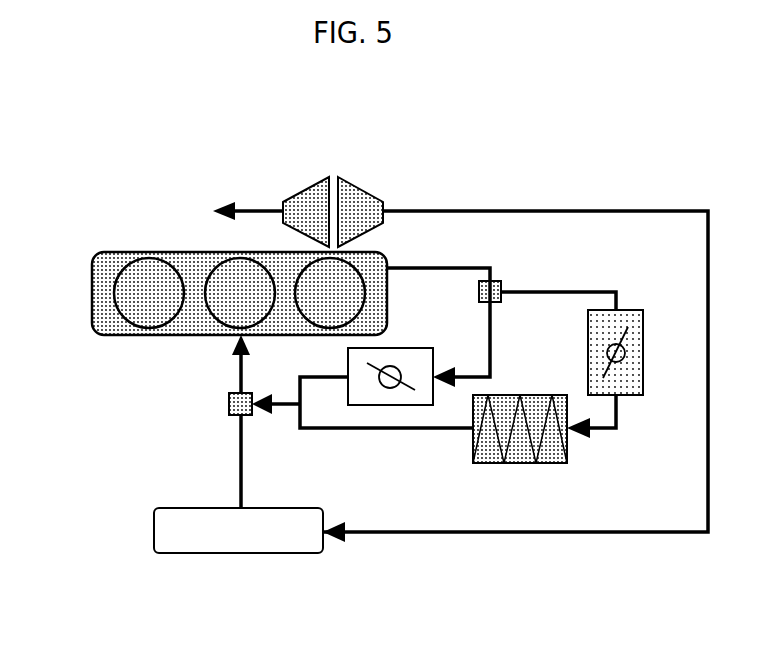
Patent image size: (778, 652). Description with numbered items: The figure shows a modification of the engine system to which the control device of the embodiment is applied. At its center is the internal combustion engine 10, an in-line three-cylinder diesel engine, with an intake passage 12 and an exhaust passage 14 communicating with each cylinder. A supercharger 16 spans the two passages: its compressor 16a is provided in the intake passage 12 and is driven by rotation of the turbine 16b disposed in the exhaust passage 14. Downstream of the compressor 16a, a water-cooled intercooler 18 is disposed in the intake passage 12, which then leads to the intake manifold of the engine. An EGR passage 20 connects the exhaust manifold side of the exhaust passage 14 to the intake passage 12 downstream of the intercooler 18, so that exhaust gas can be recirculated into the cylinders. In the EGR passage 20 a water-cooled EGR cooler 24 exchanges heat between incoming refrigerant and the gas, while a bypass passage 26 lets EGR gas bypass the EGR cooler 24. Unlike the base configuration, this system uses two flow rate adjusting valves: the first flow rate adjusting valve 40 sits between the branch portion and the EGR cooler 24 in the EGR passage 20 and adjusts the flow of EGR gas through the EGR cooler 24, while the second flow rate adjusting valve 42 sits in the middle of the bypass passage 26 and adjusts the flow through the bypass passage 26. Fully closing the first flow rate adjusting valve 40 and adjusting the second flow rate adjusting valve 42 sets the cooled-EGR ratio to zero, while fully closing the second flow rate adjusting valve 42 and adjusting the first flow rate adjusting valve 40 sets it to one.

The internal combustion engine 10 is at (92, 296).
The intake passage 12 is at (445, 210).
The exhaust passage 14 is at (258, 209).
The supercharger 16 is at (334, 162).
The compressor 16a is at (361, 188).
The turbine 16b is at (322, 186).
The intercooler 18 is at (154, 533).
The EGR passage 20 is at (432, 268).
The EGR cooler 24 is at (525, 465).
The bypass passage 26 is at (492, 325).
The first flow rate adjusting valve 40 is at (588, 372).
The second flow rate adjusting valve 42 is at (406, 348).